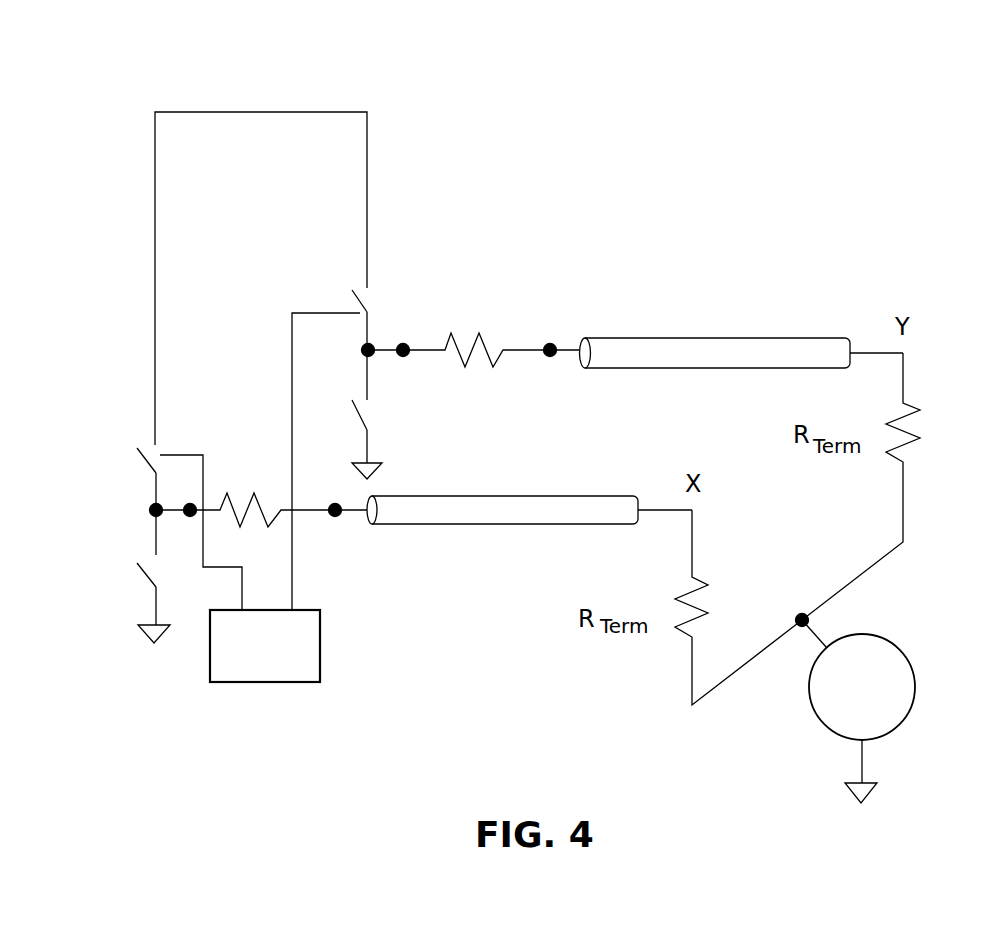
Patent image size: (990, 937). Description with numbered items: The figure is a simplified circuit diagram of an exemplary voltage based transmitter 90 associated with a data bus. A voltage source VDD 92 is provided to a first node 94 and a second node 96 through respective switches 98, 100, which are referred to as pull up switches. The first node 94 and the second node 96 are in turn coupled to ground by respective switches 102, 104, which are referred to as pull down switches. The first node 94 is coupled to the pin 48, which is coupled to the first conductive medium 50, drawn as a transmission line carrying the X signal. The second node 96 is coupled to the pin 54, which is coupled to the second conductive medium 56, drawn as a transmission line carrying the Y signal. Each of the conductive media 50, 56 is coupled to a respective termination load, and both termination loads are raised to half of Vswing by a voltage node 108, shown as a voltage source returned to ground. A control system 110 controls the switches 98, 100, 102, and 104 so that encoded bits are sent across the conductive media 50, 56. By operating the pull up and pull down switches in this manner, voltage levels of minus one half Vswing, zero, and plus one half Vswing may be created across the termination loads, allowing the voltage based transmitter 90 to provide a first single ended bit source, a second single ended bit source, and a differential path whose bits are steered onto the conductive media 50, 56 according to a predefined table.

The pin 48 is at (338, 515).
The first conductive medium 50 is at (512, 496).
The pin 54 is at (550, 344).
The second conductive medium 56 is at (712, 338).
The voltage based transmitter 90 is at (695, 168).
The voltage source VDD 92 is at (300, 78).
The first node 94 is at (150, 510).
The second node 96 is at (374, 352).
The pull up switch 98 is at (142, 457).
The pull up switch 100 is at (387, 300).
The pull down switch 102 is at (157, 589).
The pull down switch 104 is at (370, 432).
The voltage node 108 is at (916, 690).
The control system 110 is at (321, 643).